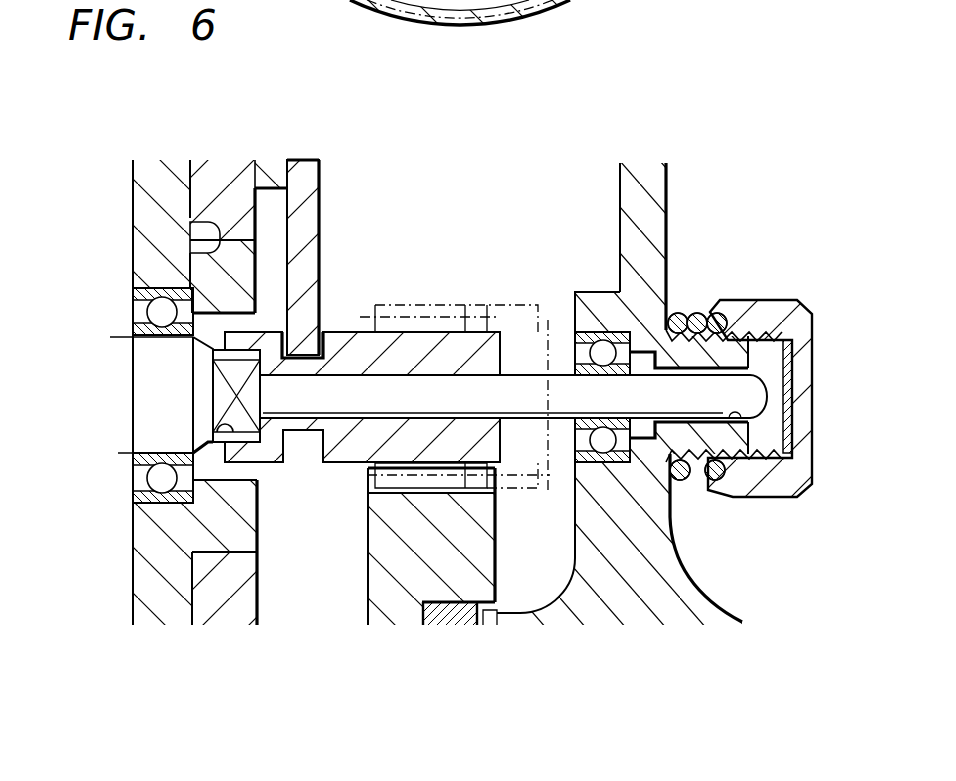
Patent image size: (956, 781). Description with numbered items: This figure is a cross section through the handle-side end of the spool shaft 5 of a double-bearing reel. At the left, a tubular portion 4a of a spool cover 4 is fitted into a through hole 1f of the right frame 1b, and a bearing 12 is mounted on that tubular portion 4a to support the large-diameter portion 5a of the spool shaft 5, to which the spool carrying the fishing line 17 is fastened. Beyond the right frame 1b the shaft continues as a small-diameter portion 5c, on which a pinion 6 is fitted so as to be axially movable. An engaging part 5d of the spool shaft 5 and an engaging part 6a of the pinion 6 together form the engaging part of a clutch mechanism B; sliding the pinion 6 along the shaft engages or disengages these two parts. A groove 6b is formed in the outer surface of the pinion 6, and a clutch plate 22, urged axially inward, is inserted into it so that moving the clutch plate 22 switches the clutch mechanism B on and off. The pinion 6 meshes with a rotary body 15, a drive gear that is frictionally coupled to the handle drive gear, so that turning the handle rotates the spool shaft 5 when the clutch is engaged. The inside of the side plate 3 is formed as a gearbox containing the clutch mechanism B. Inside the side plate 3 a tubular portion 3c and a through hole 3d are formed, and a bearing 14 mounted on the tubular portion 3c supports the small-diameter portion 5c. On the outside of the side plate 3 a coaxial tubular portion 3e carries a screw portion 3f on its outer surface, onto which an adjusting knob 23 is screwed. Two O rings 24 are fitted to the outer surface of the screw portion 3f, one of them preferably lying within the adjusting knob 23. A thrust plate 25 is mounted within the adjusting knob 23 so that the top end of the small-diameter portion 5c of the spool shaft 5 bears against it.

The right frame 1b is at (195, 191).
The through hole 1f is at (212, 253).
The side plate 3 is at (679, 177).
The tubular portion 3c is at (593, 295).
The through hole 3d is at (762, 458).
The tubular portion 3e is at (753, 457).
The screw portion 3f is at (730, 460).
The spool cover 4 is at (121, 177).
The tubular portion 4a is at (200, 220).
The spool shaft 5 is at (520, 363).
The large-diameter portion 5a is at (117, 457).
The small-diameter portion 5c is at (690, 416).
The engaging part 5d is at (220, 376).
The pinion 6 is at (452, 318).
The engaging part 6a is at (218, 422).
The groove 6b is at (322, 328).
The bearing 12 is at (133, 300).
The bearing 14 is at (575, 340).
The rotary body 15 is at (356, 591).
The fishing line 17 is at (697, 312).
The clutch plate 22 is at (322, 185).
The adjusting knob 23 is at (773, 298).
The O rings 24 is at (678, 312).
The thrust plate 25 is at (793, 357).
The clutch mechanism B is at (220, 317).